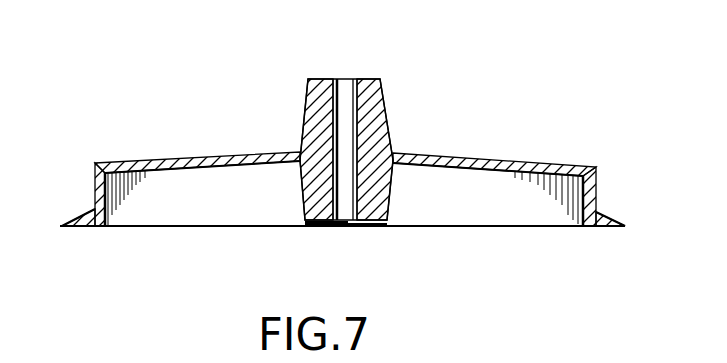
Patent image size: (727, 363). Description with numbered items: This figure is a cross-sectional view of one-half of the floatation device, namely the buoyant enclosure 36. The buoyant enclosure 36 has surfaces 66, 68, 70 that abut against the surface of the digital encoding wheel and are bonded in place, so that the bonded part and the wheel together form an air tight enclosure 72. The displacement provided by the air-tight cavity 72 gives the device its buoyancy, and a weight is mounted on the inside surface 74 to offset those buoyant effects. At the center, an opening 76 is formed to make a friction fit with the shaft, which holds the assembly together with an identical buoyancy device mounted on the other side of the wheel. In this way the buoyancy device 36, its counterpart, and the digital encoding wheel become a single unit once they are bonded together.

The buoyant enclosure 36 is at (505, 107).
The surface 66 is at (93, 227).
The surface 68 is at (327, 227).
The surface 70 is at (605, 230).
The air tight enclosure 72 is at (240, 212).
The inside surface 74 is at (108, 209).
The opening 76 is at (345, 87).